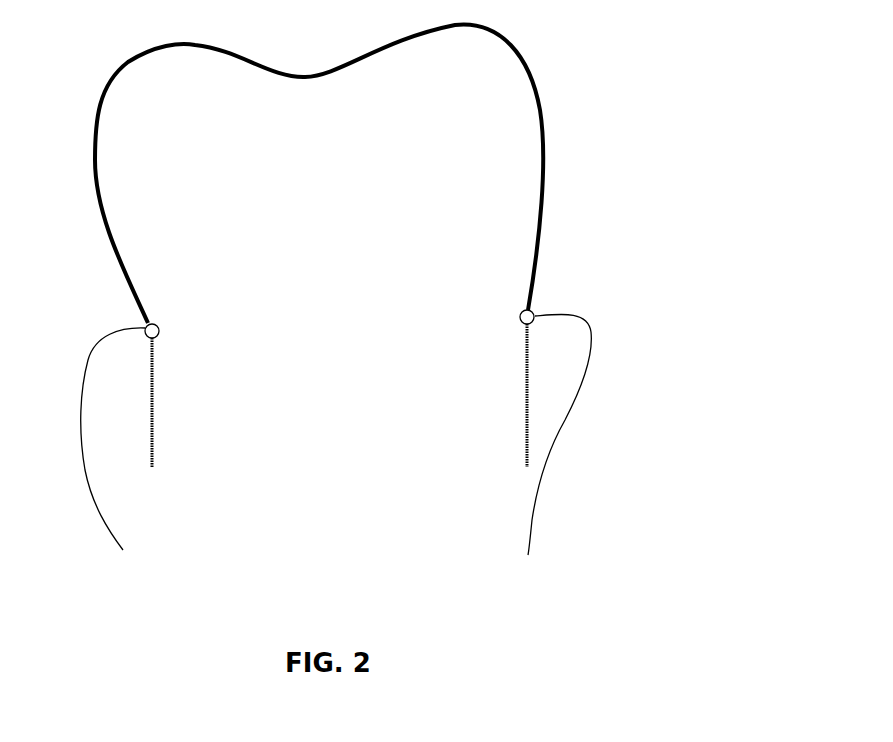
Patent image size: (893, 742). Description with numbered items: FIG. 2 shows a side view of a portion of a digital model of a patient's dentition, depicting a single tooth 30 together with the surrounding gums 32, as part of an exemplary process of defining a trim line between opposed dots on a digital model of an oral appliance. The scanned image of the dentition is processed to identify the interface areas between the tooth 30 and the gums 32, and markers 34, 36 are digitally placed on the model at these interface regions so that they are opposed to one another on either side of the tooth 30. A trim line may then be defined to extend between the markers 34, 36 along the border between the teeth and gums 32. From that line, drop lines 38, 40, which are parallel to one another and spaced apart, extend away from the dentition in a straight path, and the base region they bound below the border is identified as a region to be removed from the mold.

The tooth 30 is at (107, 100).
The gums 32 is at (92, 362).
The marker 34 is at (152, 325).
The marker 36 is at (520, 312).
The drop line 38 is at (155, 437).
The drop line 40 is at (527, 433).